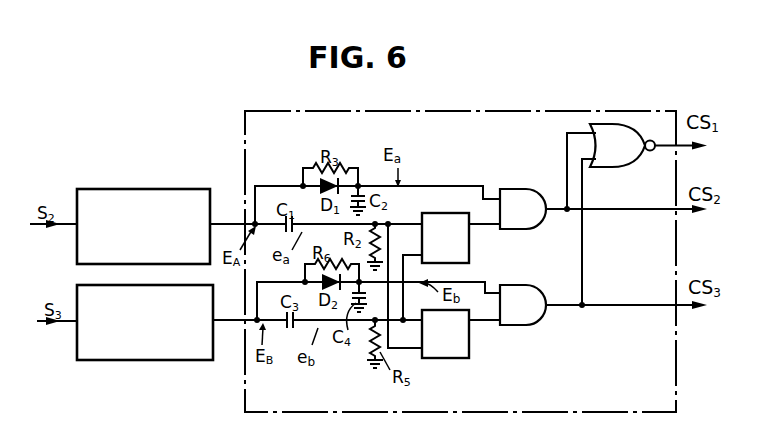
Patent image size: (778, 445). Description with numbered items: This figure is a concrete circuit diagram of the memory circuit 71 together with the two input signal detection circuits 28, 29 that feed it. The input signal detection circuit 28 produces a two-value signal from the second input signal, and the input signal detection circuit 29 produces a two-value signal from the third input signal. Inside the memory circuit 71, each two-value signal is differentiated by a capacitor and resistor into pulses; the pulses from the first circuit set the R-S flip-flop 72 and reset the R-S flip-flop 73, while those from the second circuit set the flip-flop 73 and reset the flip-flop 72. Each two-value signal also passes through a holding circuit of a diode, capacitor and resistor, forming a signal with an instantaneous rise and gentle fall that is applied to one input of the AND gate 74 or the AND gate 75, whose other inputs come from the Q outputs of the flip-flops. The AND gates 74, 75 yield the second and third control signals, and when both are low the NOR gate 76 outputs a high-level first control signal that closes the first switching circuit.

The input signal detection circuit 28 is at (146, 188).
The input signal detection circuit 29 is at (133, 362).
The memory circuit 71 is at (396, 110).
The R-S flip-flop 72 is at (447, 213).
The R-S flip-flop 73 is at (448, 358).
The AND gate 74 is at (523, 189).
The AND gate 75 is at (530, 325).
The NOR gate 76 is at (618, 168).